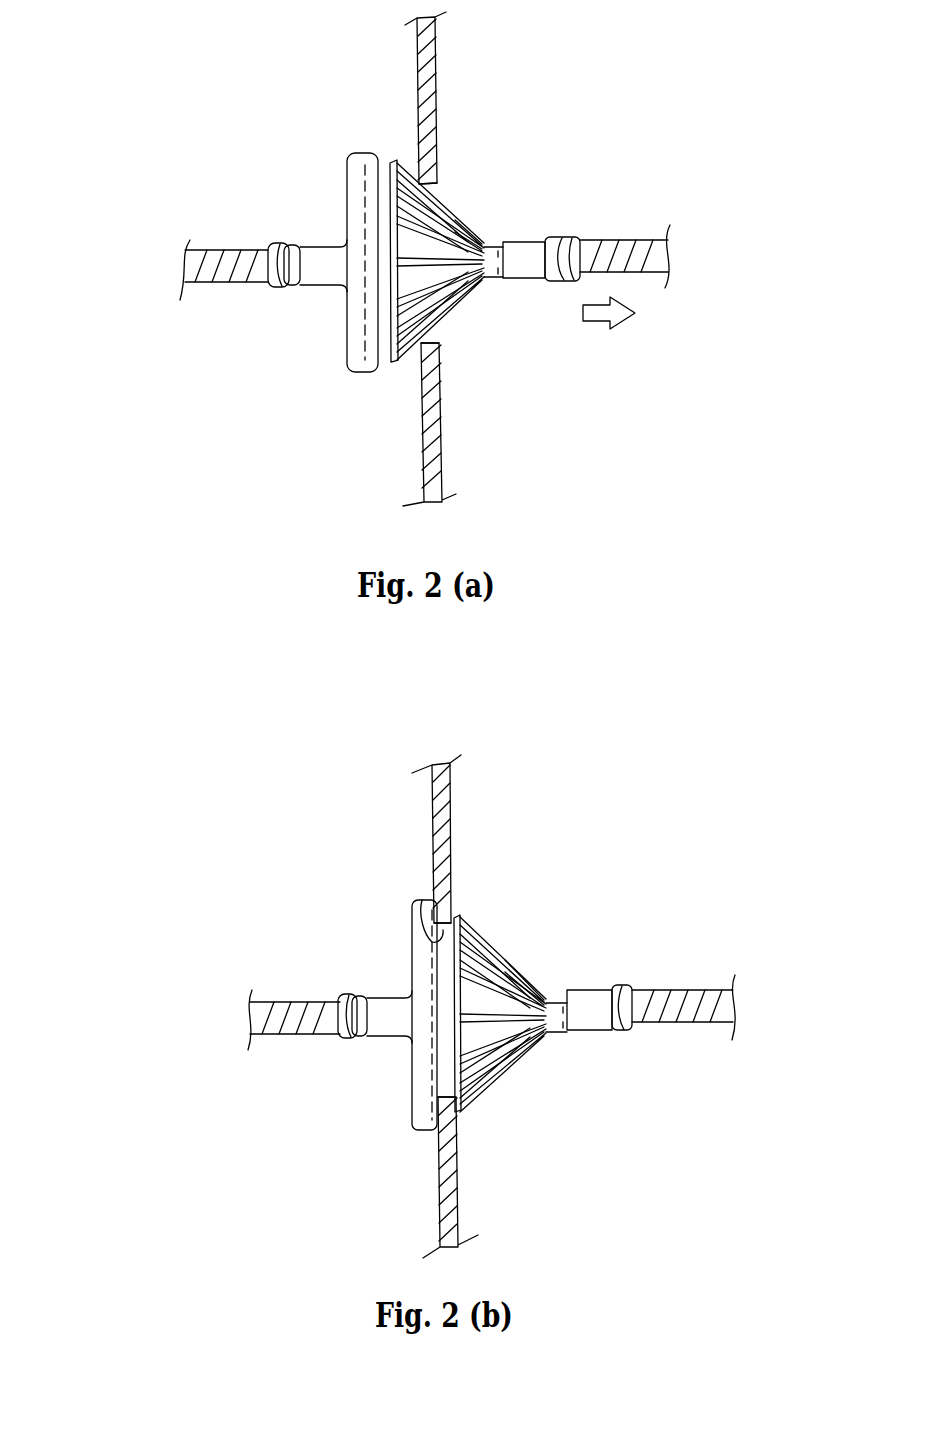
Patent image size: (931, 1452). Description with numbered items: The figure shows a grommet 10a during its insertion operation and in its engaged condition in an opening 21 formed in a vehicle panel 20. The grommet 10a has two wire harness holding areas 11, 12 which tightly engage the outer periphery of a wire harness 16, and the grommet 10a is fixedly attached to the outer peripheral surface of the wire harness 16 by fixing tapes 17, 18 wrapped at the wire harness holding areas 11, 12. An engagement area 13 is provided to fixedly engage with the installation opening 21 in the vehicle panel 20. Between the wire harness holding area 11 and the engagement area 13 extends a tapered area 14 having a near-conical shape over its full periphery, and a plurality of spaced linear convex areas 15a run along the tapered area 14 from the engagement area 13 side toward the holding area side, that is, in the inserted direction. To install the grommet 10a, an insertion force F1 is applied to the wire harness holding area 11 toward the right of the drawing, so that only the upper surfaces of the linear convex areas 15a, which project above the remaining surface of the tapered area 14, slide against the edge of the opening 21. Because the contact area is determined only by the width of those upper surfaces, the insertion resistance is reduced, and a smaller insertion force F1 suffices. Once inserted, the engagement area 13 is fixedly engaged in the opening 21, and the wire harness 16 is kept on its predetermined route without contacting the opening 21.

In FIG. 2a, the grommet 10a is at (306, 131).
In FIG. 2b, the grommet 10a is at (341, 879).
In FIG. 2a, the wire harness holding area 11 is at (535, 241).
In FIG. 2b, the wire harness holding area 11 is at (585, 989).
In FIG. 2a, the wire harness holding area 12 is at (316, 242).
In FIG. 2b, the wire harness holding area 12 is at (383, 993).
In FIG. 2a, the engagement area 13 is at (385, 360).
In FIG. 2b, the engagement area 13 is at (457, 916).
In FIG. 2a, the tapered area 14 is at (444, 325).
In FIG. 2b, the tapered area 14 is at (500, 1078).
In FIG. 2a, the linear convex area 15a is at (456, 216).
In FIG. 2b, the linear convex area 15a is at (500, 955).
In FIG. 2a, the wire harness 16 is at (670, 238).
In FIG. 2b, the wire harness 16 is at (706, 988).
In FIG. 2a, the fixing tape 17 is at (637, 240).
In FIG. 2b, the fixing tape 17 is at (640, 990).
In FIG. 2a, the fixing tape 18 is at (277, 242).
In FIG. 2b, the fixing tape 18 is at (347, 995).
In FIG. 2a, the vehicle panel 20 is at (437, 62).
In FIG. 2b, the vehicle panel 20 is at (450, 801).
In FIG. 2a, the opening 21 is at (433, 185).
In FIG. 2b, the opening 21 is at (430, 893).
In FIG. 2a, the insertion force F1 is at (595, 322).